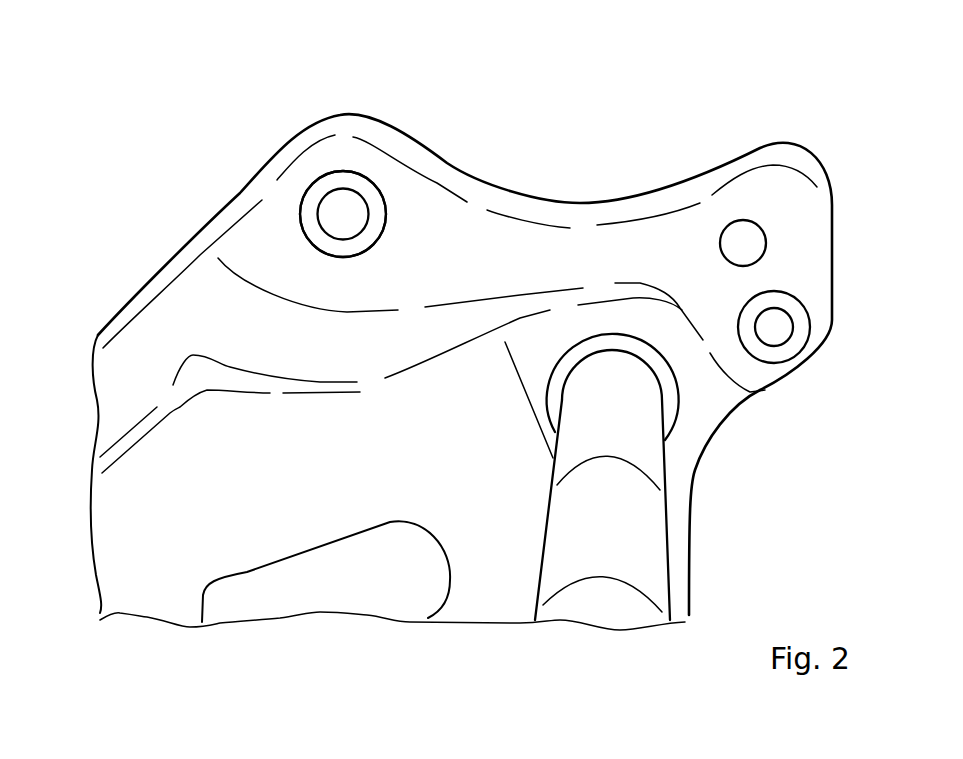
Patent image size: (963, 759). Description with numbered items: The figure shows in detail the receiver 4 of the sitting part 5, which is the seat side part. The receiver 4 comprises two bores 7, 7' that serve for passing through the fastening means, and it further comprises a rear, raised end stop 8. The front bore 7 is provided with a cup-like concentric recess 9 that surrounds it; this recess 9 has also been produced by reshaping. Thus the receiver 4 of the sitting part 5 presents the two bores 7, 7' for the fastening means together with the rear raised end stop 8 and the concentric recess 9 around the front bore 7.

The receiver 4 is at (433, 243).
The sitting part 5 is at (145, 505).
The front bore 7 is at (338, 144).
The bore 7' is at (721, 155).
The rear raised end stop 8 is at (778, 318).
The cup-like concentric recess 9 is at (310, 208).